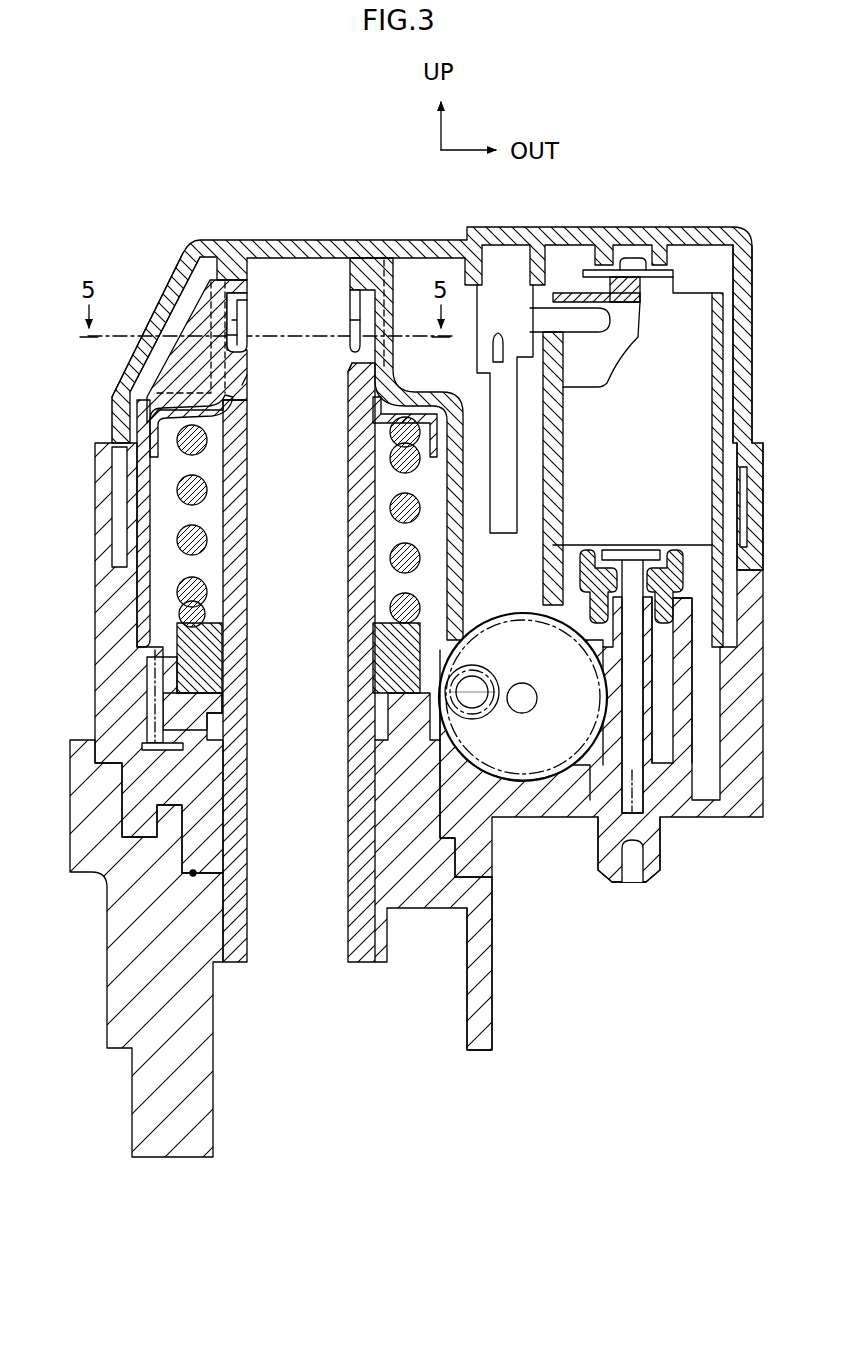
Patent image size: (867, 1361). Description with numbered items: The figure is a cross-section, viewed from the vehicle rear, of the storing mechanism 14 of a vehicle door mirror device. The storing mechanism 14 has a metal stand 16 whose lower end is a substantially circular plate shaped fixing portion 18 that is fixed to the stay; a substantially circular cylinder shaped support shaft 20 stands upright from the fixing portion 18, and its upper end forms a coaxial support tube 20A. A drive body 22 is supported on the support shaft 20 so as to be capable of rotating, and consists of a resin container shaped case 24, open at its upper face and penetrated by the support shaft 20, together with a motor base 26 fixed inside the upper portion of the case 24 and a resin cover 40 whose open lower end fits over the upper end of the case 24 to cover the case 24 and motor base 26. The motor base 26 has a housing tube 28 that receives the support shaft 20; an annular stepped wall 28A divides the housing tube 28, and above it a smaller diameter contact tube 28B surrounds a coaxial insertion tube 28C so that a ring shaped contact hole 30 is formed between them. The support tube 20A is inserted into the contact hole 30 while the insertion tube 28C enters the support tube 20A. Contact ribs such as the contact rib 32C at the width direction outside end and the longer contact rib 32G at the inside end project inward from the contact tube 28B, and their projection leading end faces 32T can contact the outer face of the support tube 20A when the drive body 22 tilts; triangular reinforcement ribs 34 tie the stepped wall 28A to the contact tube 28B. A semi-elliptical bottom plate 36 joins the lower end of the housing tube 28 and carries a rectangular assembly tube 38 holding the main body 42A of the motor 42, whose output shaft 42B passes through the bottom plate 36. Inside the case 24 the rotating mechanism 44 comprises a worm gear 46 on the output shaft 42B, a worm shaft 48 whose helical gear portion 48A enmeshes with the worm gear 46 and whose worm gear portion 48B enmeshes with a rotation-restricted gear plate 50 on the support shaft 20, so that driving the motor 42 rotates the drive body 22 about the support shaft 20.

The storing mechanism 14 is at (184, 170).
The stand 16 is at (104, 950).
The fixing portion 18 is at (494, 900).
The support shaft 20 is at (389, 384).
The support tube 20A is at (228, 296).
The drive body 22 is at (164, 270).
The case 24 is at (96, 652).
The motor base 26 is at (690, 581).
The housing tube 28 is at (136, 517).
The stepped wall 28A is at (386, 385).
The contact tube 28B is at (398, 312).
The insertion tube 28C is at (351, 290).
The contact hole 30 is at (238, 322).
The contact rib 32C is at (351, 330).
The contact rib 32G is at (226, 340).
The projection leading end face 32T is at (244, 380).
The reinforcement rib 34 is at (160, 366).
The bottom plate 36 is at (580, 578).
The assembly tube 38 is at (722, 333).
The cover 40 is at (676, 238).
The motor 42 is at (742, 388).
The main body 42A is at (728, 430).
The output shaft 42B is at (651, 553).
The rotating mechanism 44 is at (577, 782).
The worm gear 46 is at (665, 699).
The worm shaft 48 is at (504, 792).
The helical gear portion 48A is at (541, 790).
The worm gear portion 48B is at (486, 668).
The gear plate 50 is at (147, 690).